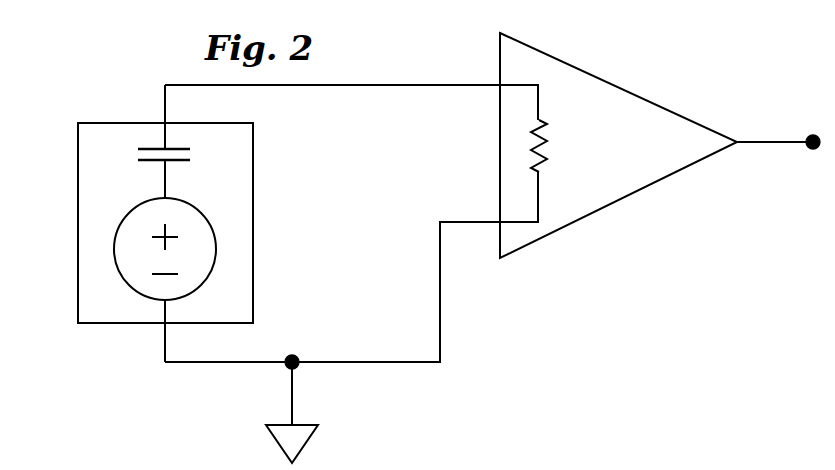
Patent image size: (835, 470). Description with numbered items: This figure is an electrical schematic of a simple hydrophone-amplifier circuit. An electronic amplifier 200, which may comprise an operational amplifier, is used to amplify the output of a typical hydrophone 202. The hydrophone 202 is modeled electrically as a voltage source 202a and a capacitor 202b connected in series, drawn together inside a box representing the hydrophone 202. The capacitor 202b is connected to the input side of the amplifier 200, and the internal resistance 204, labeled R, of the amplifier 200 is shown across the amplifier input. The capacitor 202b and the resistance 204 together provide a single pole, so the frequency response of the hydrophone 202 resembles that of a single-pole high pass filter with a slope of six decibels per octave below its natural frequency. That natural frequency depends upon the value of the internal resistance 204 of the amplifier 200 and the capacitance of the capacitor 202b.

The electronic amplifier 200 is at (645, 98).
The hydrophone 202 is at (107, 326).
The voltage source 202a is at (118, 271).
The capacitor 202b is at (150, 149).
The internal resistance 204 is at (545, 158).